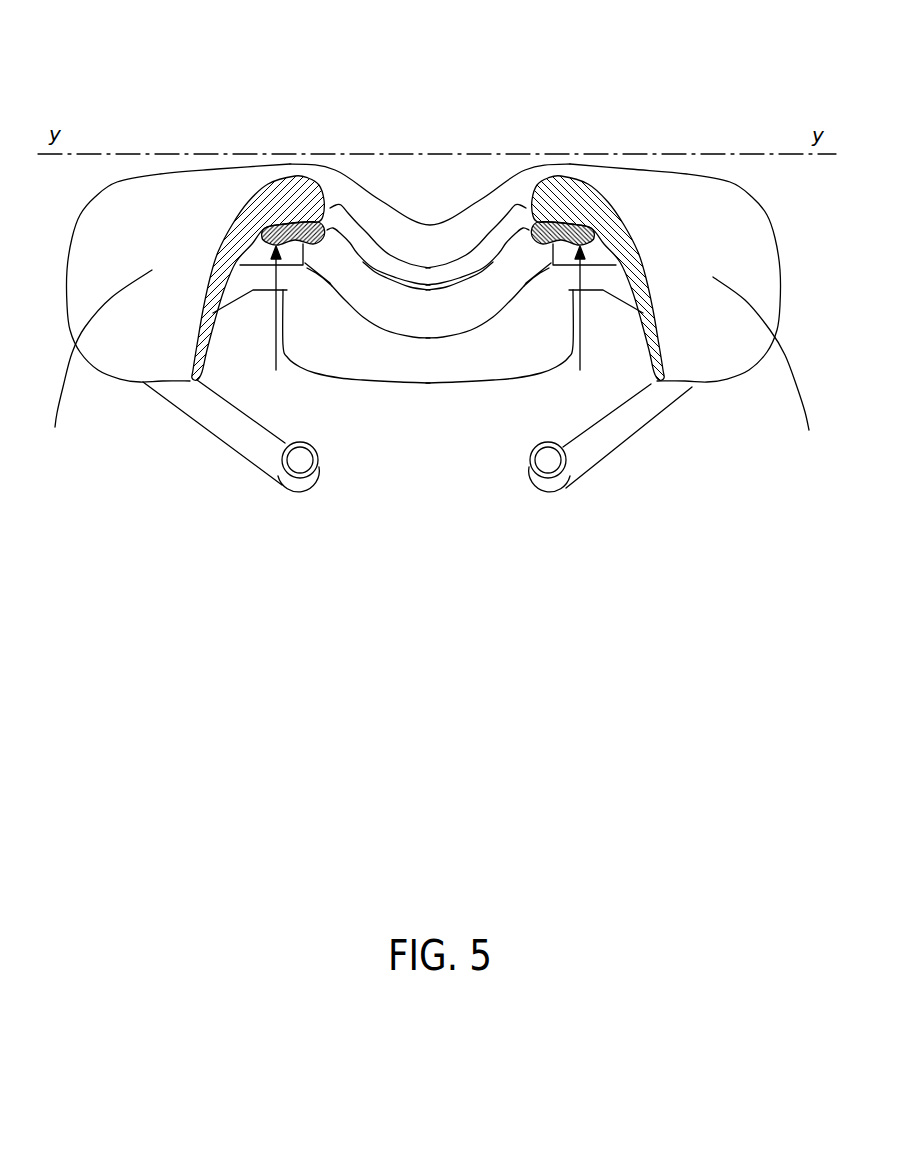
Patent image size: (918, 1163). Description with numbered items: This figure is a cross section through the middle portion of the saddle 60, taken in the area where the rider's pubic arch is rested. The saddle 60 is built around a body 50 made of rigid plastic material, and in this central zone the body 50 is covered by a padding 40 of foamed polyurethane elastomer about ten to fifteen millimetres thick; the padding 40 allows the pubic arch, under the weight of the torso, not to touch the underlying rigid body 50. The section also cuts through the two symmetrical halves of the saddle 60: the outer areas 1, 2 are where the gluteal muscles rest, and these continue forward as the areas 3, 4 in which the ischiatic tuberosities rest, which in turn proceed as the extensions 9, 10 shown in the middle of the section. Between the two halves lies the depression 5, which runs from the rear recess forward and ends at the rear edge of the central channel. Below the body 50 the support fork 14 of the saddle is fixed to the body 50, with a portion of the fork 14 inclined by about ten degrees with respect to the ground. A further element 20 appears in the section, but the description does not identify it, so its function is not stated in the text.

The area 1 is at (143, 197).
The area 2 is at (695, 187).
The area 3 is at (99, 363).
The area 4 is at (763, 368).
The depression 5 is at (432, 221).
The extension 9 is at (313, 173).
The extension 10 is at (553, 173).
The support fork 14 is at (240, 460).
The nose piece 20 is at (431, 383).
The padding 40 is at (292, 168).
The body 50 is at (428, 320).
The saddle 60 is at (155, 166).